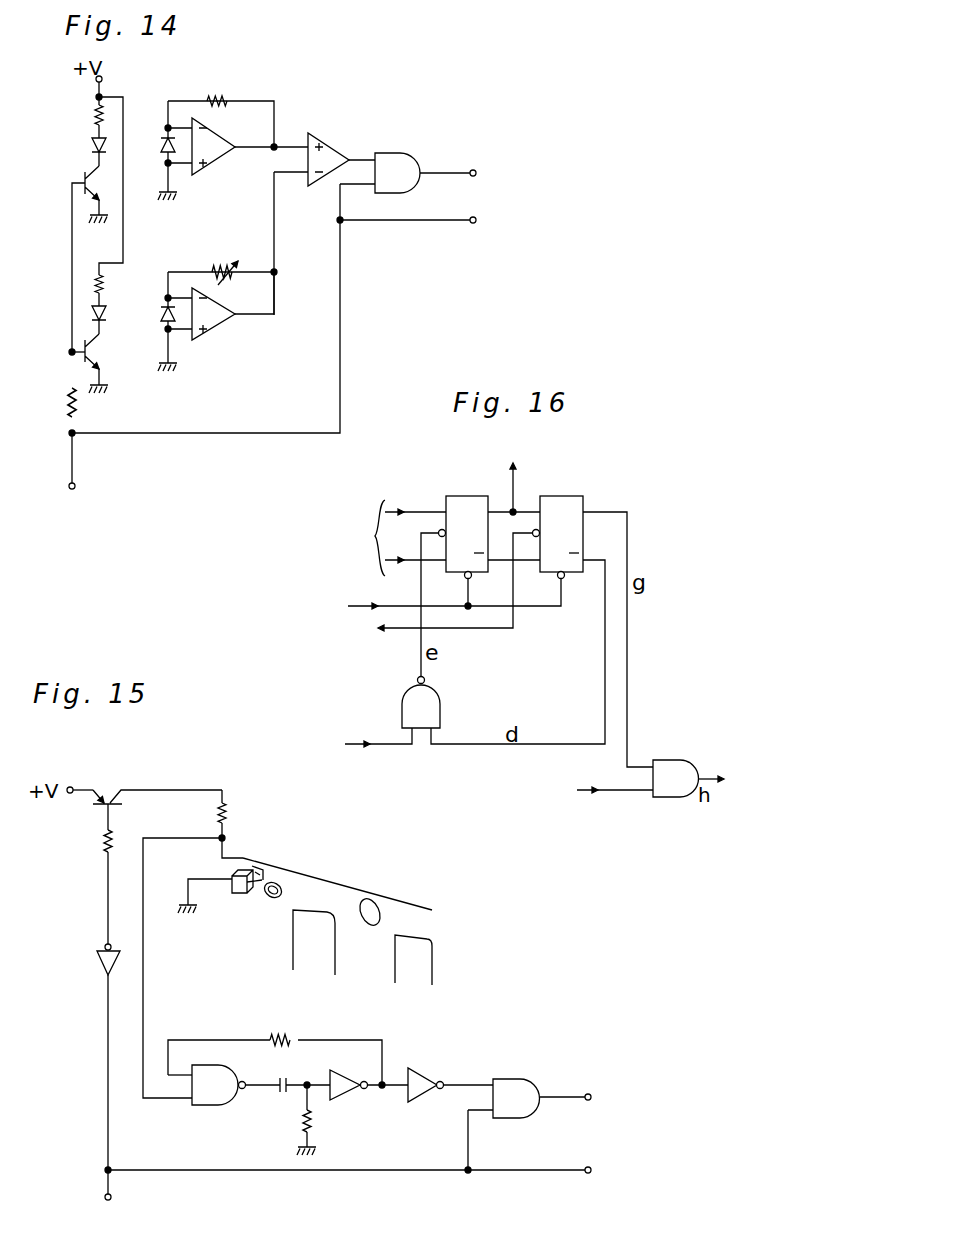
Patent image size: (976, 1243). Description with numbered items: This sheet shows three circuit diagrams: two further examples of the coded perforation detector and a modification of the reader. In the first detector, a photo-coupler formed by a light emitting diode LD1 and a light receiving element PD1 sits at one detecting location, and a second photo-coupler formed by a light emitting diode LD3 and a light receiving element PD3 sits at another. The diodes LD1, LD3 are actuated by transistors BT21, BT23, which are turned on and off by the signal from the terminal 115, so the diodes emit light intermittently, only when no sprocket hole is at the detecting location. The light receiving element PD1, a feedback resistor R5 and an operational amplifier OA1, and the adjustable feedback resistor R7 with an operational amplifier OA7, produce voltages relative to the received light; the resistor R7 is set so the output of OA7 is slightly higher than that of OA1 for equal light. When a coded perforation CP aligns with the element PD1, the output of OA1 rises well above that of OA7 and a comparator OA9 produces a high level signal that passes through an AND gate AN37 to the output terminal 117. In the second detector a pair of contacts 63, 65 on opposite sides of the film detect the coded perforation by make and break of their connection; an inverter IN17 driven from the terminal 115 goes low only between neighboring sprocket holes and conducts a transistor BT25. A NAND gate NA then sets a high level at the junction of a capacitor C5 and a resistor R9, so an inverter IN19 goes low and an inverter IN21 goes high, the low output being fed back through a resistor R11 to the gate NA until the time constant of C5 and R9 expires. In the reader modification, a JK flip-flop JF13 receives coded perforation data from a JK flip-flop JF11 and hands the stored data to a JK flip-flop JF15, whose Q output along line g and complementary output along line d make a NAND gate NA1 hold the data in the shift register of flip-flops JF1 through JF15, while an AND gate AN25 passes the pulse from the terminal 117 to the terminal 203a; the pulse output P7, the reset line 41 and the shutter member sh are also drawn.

In FIG. 14, the light emitting diode LD1 is at (92, 147).
In FIG. 14, the light emitting diode LD3 is at (124, 306).
In FIG. 14, the light receiving element PD1 is at (162, 142).
In FIG. 14, the light receiving element PD3 is at (161, 316).
In FIG. 14, the feedback resistor R5 is at (219, 98).
In FIG. 14, the feedback resistor R7 is at (225, 268).
In FIG. 15, the resistor R9 is at (312, 1118).
In FIG. 15, the resistor R11 is at (285, 1037).
In FIG. 14, the operational amplifier OA1 is at (216, 158).
In FIG. 14, the operational amplifier OA7 is at (215, 320).
In FIG. 14, the comparator OA9 is at (328, 145).
In FIG. 14, the AND gate AN37 is at (404, 170).
In FIG. 15, the AND gate AN37 is at (518, 1078).
In FIG. 16, the AND gate AN25 is at (672, 768).
In FIG. 14, the transistor BT21 is at (98, 183).
In FIG. 14, the transistor BT23 is at (98, 352).
In FIG. 15, the transistor BT25 is at (103, 786).
In FIG. 14, the terminal 115 is at (287, 366).
In FIG. 16, the terminal 115 is at (356, 742).
In FIG. 15, the terminal 115 is at (95, 1197).
In FIG. 14, the output terminal 117 is at (473, 173).
In FIG. 16, the output terminal 117 is at (591, 790).
In FIG. 15, the output terminal 117 is at (590, 1098).
In FIG. 16, the JK flip-flop JF11 is at (386, 538).
In FIG. 16, the JK flip-flop JF13 is at (470, 500).
In FIG. 16, the JK flip-flop JF15 is at (575, 498).
In FIG. 16, the JK flip-flop JF1 is at (400, 589).
In FIG. 16, the pulse output P7 is at (516, 474).
In FIG. 16, the reset signal line 41 is at (439, 598).
In FIG. 16, the NAND gate NA1 is at (432, 698).
In FIG. 15, the NAND gate NA is at (205, 1103).
In FIG. 16, the terminal 203a is at (740, 780).
In FIG. 15, the inverter IN17 is at (100, 953).
In FIG. 15, the inverter IN19 is at (344, 1090).
In FIG. 15, the inverter IN21 is at (425, 1068).
In FIG. 15, the capacitor C5 is at (277, 1092).
In FIG. 15, the coded perforation CP is at (376, 898).
In FIG. 15, the contact 63 is at (256, 893).
In FIG. 15, the contact 65 is at (273, 882).
In FIG. 15, the shutter blade sh is at (327, 945).